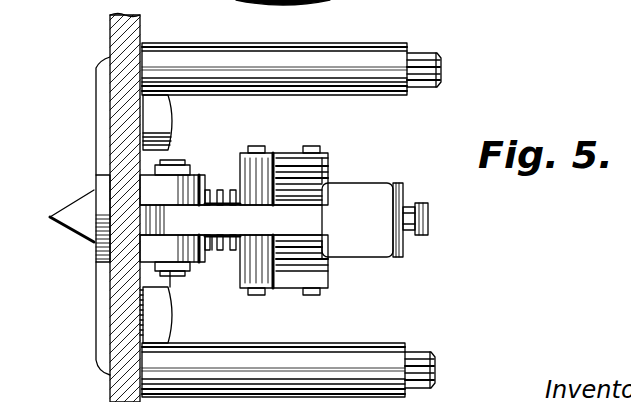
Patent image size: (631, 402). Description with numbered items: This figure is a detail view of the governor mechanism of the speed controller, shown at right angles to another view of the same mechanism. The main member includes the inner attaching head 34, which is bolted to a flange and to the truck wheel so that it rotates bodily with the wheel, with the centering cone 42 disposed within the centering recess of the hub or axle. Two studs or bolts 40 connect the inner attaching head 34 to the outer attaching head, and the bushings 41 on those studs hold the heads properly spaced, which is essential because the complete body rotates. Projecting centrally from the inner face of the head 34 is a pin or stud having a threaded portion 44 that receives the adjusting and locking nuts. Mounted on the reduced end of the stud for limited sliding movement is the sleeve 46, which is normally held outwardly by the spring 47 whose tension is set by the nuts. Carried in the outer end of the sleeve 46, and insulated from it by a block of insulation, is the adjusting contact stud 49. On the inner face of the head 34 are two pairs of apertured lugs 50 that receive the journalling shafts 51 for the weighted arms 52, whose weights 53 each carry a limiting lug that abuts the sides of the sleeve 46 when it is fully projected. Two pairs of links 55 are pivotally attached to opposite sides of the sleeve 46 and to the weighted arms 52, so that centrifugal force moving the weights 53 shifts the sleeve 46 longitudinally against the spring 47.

The inner attaching head 34 is at (110, 42).
The studs or bolts 40 is at (490, 50).
The bushings 41 is at (408, 26).
The centering cone 42 is at (80, 232).
The threaded portion 44 is at (225, 185).
The sleeve 46 is at (305, 198).
The spring 47 is at (226, 249).
The adjusting contact stud 49 is at (472, 195).
The apertured lugs 50 is at (182, 190).
The journalling shafts 51 is at (180, 271).
The weighted arms 52 is at (282, 215).
The weights 53 is at (380, 186).
The links 55 is at (308, 160).